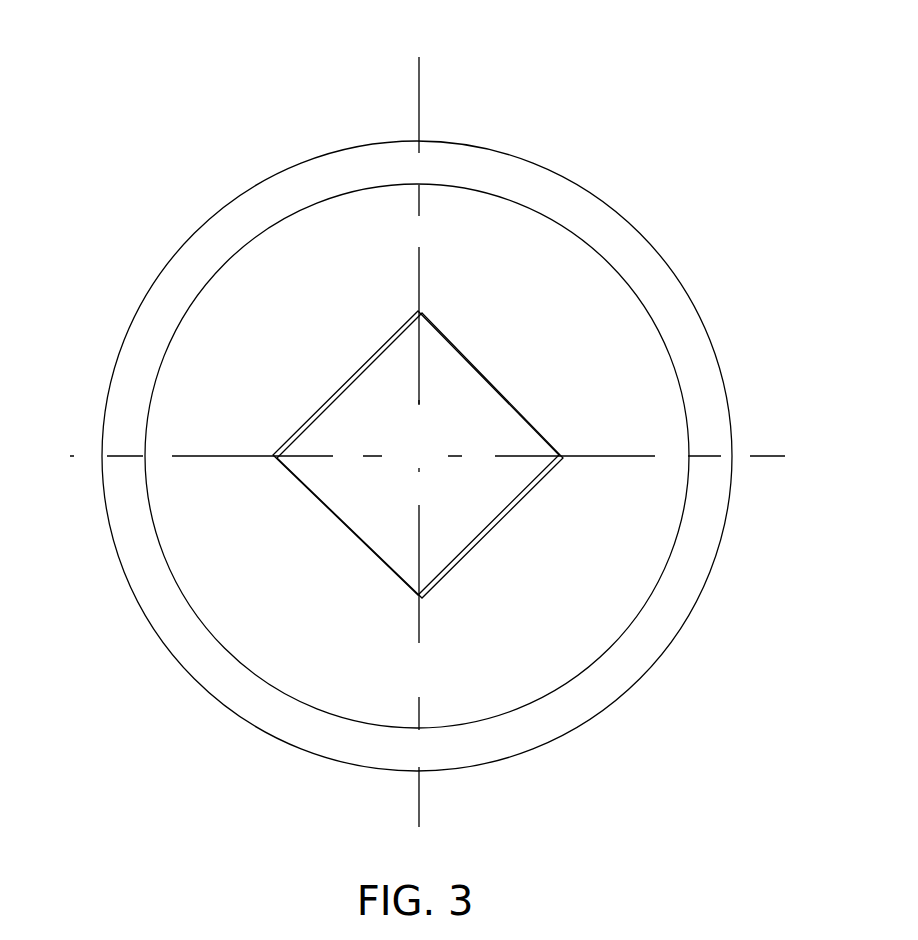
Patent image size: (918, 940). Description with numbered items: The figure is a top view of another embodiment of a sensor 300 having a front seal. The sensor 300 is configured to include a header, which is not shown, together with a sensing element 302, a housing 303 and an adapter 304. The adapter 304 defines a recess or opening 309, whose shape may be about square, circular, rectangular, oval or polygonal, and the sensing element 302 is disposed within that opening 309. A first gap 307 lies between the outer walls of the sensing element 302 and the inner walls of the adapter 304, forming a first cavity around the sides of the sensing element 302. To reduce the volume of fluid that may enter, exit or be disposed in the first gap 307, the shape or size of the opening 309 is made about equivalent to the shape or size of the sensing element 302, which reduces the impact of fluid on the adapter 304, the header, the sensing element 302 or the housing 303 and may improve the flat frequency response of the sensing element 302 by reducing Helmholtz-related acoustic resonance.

The sensor 300 is at (396, 42).
The sensing element 302 is at (397, 459).
The housing 303 is at (397, 761).
The adapter 304 is at (397, 676).
The first gap 307 is at (490, 378).
The opening 309 is at (445, 336).